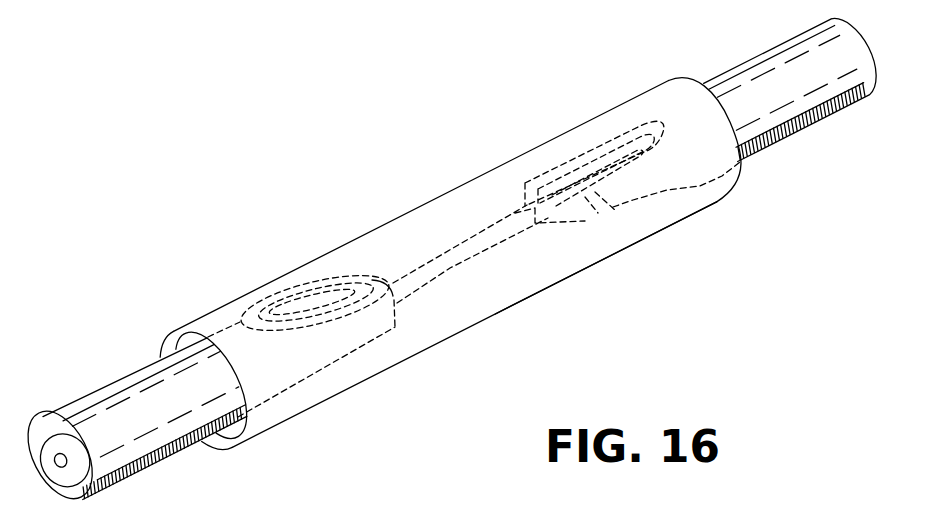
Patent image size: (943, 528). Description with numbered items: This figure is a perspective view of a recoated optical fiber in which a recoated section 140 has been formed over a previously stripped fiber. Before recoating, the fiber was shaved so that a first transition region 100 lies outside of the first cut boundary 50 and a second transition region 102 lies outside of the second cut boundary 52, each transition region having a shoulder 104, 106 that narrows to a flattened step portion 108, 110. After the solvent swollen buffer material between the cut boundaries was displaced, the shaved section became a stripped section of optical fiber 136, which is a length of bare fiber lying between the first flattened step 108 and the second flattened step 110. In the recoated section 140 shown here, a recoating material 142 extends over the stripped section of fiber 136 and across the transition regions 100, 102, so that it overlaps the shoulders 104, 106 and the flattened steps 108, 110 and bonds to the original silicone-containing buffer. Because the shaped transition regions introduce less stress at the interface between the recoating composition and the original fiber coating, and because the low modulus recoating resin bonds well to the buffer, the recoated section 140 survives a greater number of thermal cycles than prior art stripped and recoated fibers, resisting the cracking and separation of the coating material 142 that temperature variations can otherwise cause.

The first transition region 100 is at (745, 230).
The second transition region 102 is at (230, 284).
The shoulder 104 is at (650, 113).
The shoulder 106 is at (253, 320).
The first flattened step 108 is at (597, 168).
The second flattened step 110 is at (323, 305).
The stripped section of optical fiber 136 is at (503, 270).
The recoated section 140 is at (474, 132).
The recoating material 142 is at (427, 223).
The first cut boundary 50 is at (565, 184).
The second cut boundary 52 is at (397, 314).